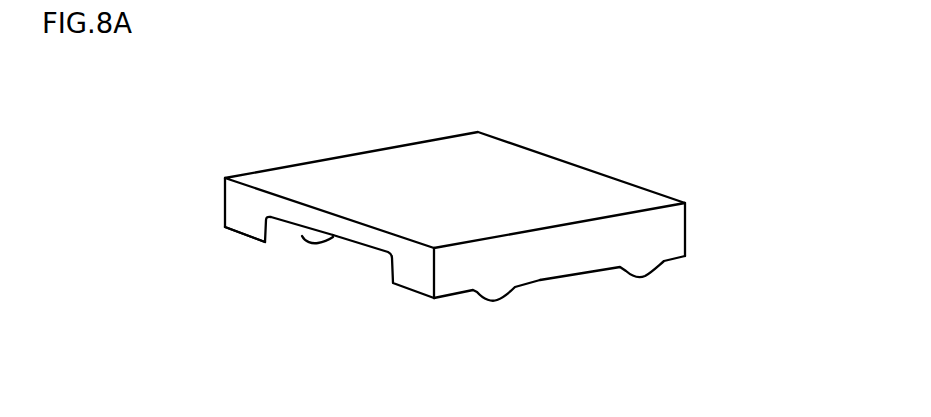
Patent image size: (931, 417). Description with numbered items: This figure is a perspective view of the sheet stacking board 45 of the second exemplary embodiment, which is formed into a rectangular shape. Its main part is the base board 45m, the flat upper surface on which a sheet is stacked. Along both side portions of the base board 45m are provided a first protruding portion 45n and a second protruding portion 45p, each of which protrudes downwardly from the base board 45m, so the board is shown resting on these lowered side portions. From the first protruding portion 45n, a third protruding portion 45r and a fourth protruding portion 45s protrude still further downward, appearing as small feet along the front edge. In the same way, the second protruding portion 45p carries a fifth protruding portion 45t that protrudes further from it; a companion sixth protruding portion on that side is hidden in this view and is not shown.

The sheet stacking board 45 is at (694, 80).
The base board 45m is at (440, 182).
The second protruding portion 45p is at (247, 227).
The fifth protruding portion 45t is at (322, 243).
The first protruding portion 45n is at (415, 278).
The third protruding portion 45r is at (497, 300).
The fourth protruding portion 45s is at (642, 275).